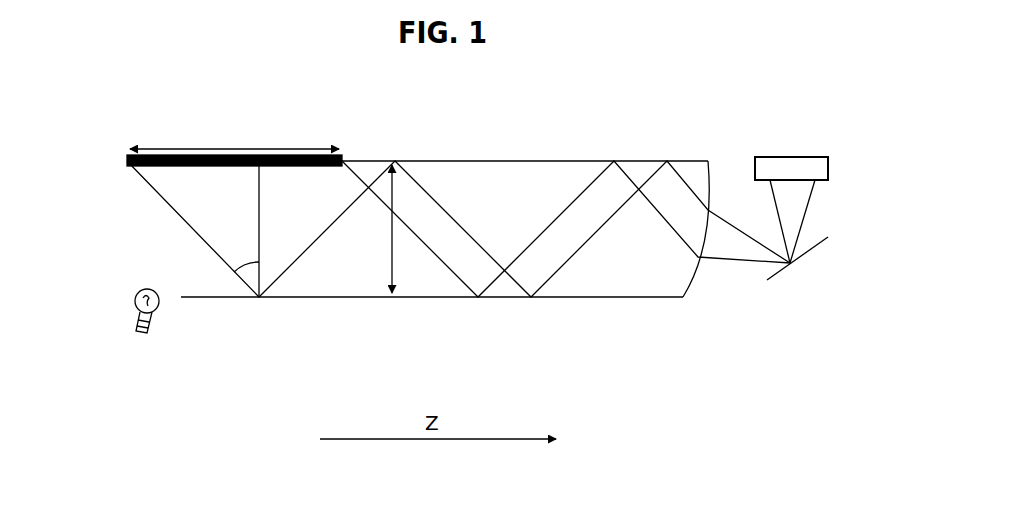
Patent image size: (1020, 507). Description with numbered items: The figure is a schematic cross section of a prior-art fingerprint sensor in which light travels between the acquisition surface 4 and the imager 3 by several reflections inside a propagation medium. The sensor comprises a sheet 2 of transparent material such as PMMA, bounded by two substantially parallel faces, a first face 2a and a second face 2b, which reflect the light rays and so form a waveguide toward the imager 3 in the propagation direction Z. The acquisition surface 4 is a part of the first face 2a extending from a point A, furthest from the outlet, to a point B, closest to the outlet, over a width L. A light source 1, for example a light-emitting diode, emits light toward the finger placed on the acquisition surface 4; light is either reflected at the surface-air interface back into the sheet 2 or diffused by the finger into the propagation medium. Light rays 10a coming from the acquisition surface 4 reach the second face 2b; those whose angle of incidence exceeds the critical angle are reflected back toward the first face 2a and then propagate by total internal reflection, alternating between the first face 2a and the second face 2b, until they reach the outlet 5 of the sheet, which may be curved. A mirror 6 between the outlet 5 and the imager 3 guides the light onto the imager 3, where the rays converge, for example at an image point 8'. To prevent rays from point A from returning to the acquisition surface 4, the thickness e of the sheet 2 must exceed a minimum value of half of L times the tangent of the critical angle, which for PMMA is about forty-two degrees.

The light source 1 is at (105, 318).
The sheet 2 is at (468, 234).
The first face 2a is at (510, 156).
The second face 2b is at (588, 302).
The imager 3 is at (793, 157).
The acquisition surface 4 is at (218, 152).
The outlet 5 is at (698, 276).
The mirror 6 is at (805, 258).
The image point on detector 8' is at (839, 189).
The light ray 10a is at (197, 245).